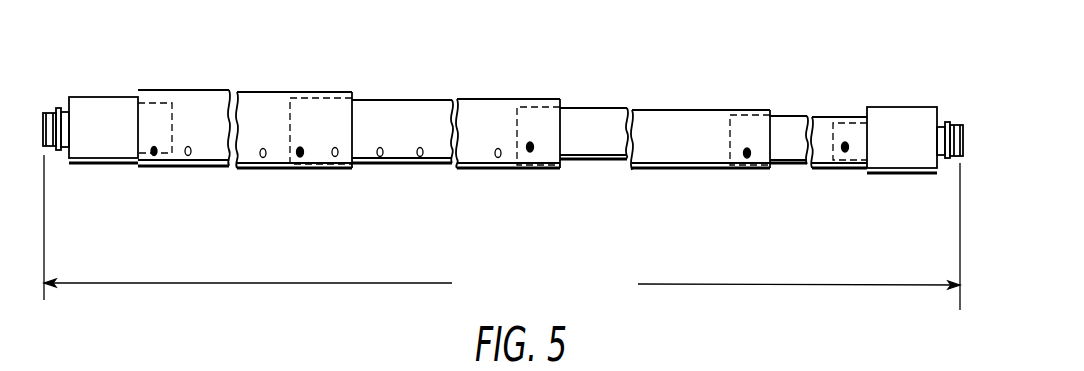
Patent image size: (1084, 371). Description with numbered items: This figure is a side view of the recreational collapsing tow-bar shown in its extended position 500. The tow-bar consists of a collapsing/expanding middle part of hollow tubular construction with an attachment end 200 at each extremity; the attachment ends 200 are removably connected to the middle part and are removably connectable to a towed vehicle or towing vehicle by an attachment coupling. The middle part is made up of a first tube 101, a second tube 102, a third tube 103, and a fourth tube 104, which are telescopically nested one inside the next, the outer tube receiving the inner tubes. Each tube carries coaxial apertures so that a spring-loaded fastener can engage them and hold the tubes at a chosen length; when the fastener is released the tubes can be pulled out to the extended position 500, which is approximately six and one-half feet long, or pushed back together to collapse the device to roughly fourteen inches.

The attachment ends 200 is at (113, 97).
The first tube 101 is at (197, 98).
The second tube 102 is at (407, 97).
The third tube 103 is at (695, 108).
The fourth tube 104 is at (822, 117).
The extended position 500 is at (502, 232).